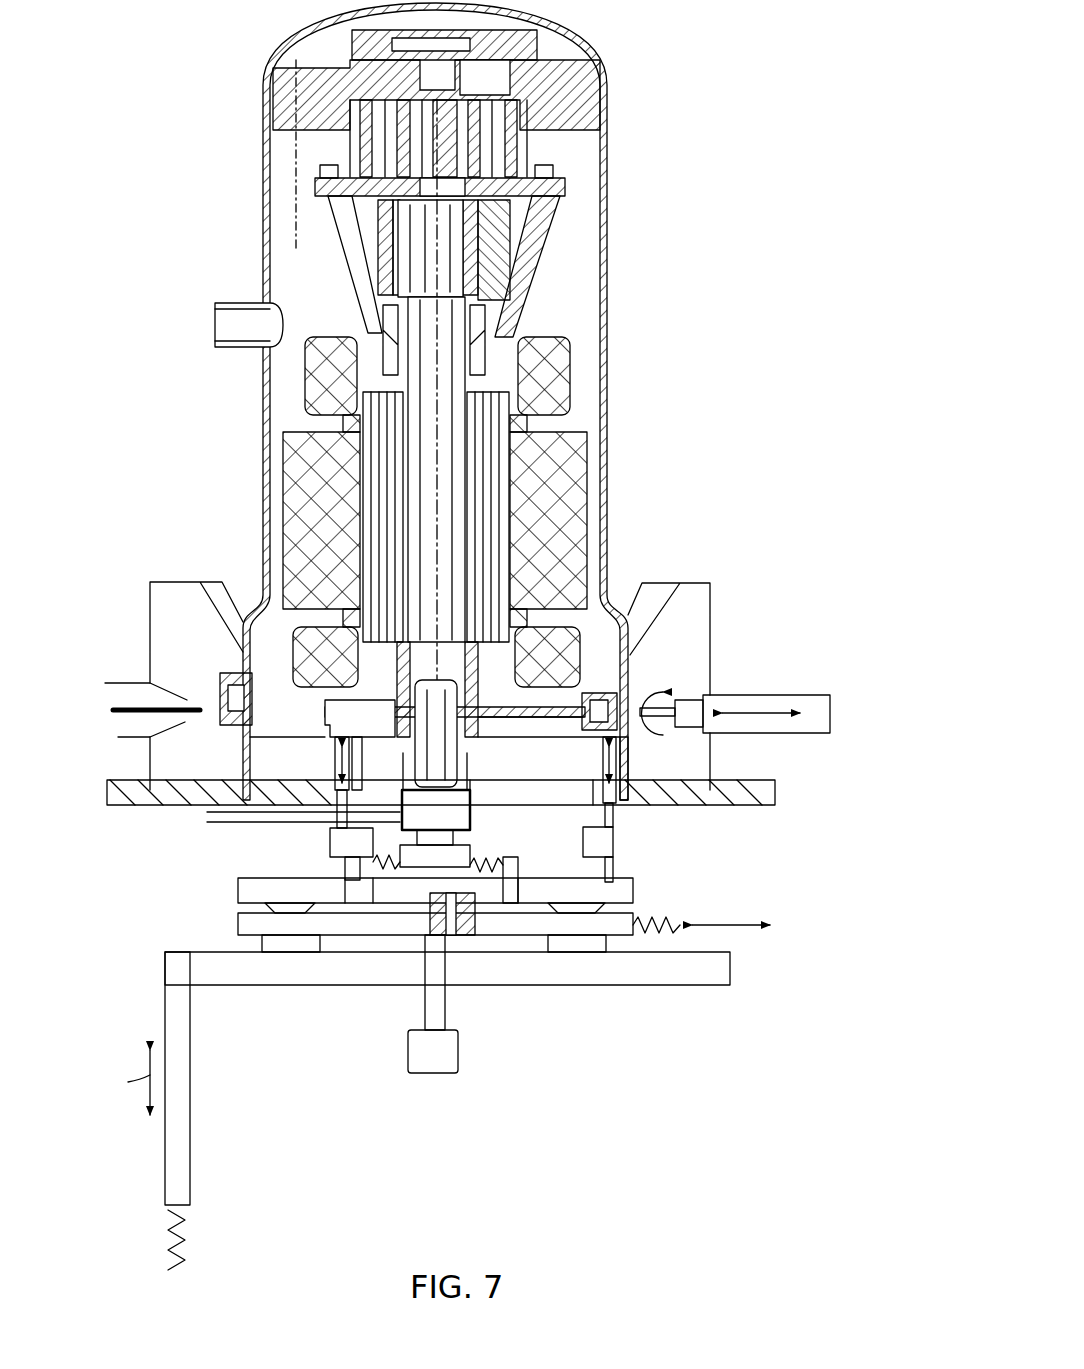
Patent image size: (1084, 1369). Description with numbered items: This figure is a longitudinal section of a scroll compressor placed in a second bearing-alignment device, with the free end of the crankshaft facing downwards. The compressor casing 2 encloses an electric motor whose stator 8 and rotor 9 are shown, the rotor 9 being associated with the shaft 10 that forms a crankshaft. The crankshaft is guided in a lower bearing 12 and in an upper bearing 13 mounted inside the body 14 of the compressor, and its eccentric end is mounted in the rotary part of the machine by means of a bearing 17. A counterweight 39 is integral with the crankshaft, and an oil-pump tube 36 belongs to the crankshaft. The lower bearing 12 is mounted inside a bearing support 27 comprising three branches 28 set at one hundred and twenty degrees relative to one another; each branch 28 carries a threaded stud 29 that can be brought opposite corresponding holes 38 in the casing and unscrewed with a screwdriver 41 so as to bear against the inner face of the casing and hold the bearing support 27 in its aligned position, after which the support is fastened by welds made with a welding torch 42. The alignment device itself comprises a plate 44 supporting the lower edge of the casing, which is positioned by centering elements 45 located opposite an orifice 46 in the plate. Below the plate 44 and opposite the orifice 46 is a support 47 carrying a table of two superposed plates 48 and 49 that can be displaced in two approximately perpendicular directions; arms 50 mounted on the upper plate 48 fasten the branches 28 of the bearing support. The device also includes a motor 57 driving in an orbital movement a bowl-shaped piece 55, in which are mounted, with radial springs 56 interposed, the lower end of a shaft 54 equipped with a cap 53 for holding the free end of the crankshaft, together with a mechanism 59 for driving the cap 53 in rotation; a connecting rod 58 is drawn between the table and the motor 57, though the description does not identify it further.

The housing 2 is at (605, 300).
The stator 8 is at (560, 462).
The rotor 9 is at (490, 510).
The shaft 10 is at (437, 415).
The lower bearing 12 is at (268, 590).
The upper bearing 13 is at (385, 355).
The body 14 is at (560, 210).
The bearing 17 is at (385, 240).
The bearing support 27 is at (625, 752).
The branches 28 is at (595, 605).
The threaded stud 29 is at (610, 693).
The oil-pump tube 36 is at (415, 745).
The holes 38 is at (625, 715).
The counterweight 39 is at (540, 258).
The screwdriver 41 is at (748, 722).
The welding torch 42 is at (137, 697).
The plate 44 is at (772, 785).
The centering elements 45 is at (190, 603).
The orifice 46 is at (615, 810).
The support 47 is at (710, 972).
The upper plate 48 is at (620, 892).
The lower plate 49 is at (610, 925).
The arms 50 is at (345, 832).
The cap 53 is at (587, 765).
The shaft 54 is at (462, 840).
The piece 55 is at (512, 870).
The radial springs 56 is at (390, 880).
The motor 57 is at (432, 1042).
The rod 58 is at (450, 905).
The mechanism 59 is at (245, 828).